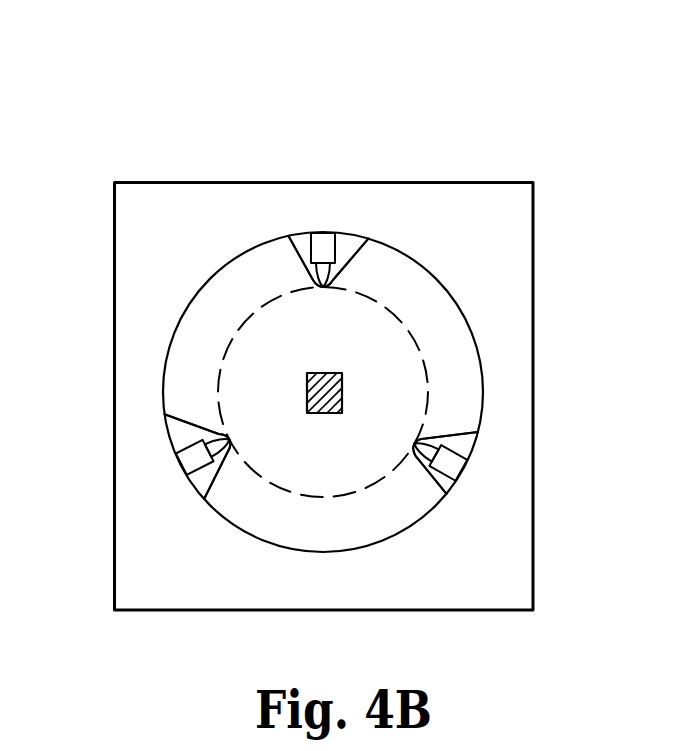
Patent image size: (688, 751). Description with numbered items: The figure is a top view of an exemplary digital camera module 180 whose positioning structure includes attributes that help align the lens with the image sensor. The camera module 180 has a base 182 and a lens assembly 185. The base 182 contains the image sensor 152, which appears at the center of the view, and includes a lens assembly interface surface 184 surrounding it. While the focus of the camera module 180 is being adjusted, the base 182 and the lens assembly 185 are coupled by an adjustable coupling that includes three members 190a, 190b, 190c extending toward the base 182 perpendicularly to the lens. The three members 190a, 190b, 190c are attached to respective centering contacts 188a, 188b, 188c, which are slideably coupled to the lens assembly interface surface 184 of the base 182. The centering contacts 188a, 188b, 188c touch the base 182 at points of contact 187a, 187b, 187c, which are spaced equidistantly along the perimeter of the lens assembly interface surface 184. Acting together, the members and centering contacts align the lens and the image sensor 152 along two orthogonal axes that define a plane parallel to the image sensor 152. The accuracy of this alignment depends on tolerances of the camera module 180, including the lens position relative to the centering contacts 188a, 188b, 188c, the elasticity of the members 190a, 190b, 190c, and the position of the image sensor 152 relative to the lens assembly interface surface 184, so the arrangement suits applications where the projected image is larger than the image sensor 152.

The digital camera module 180 is at (453, 95).
The base 182 is at (534, 582).
The lens assembly interface surface 184 is at (407, 327).
The lens assembly 185 is at (481, 369).
The image sensor 152 is at (325, 373).
The point of contact 187a is at (165, 414).
The point of contact 187b is at (288, 235).
The point of contact 187c is at (413, 443).
The centering contact 188a is at (204, 499).
The centering contact 188b is at (368, 236).
The centering contact 188c is at (447, 493).
The member 190a is at (180, 456).
The member 190b is at (324, 233).
The member 190c is at (465, 442).